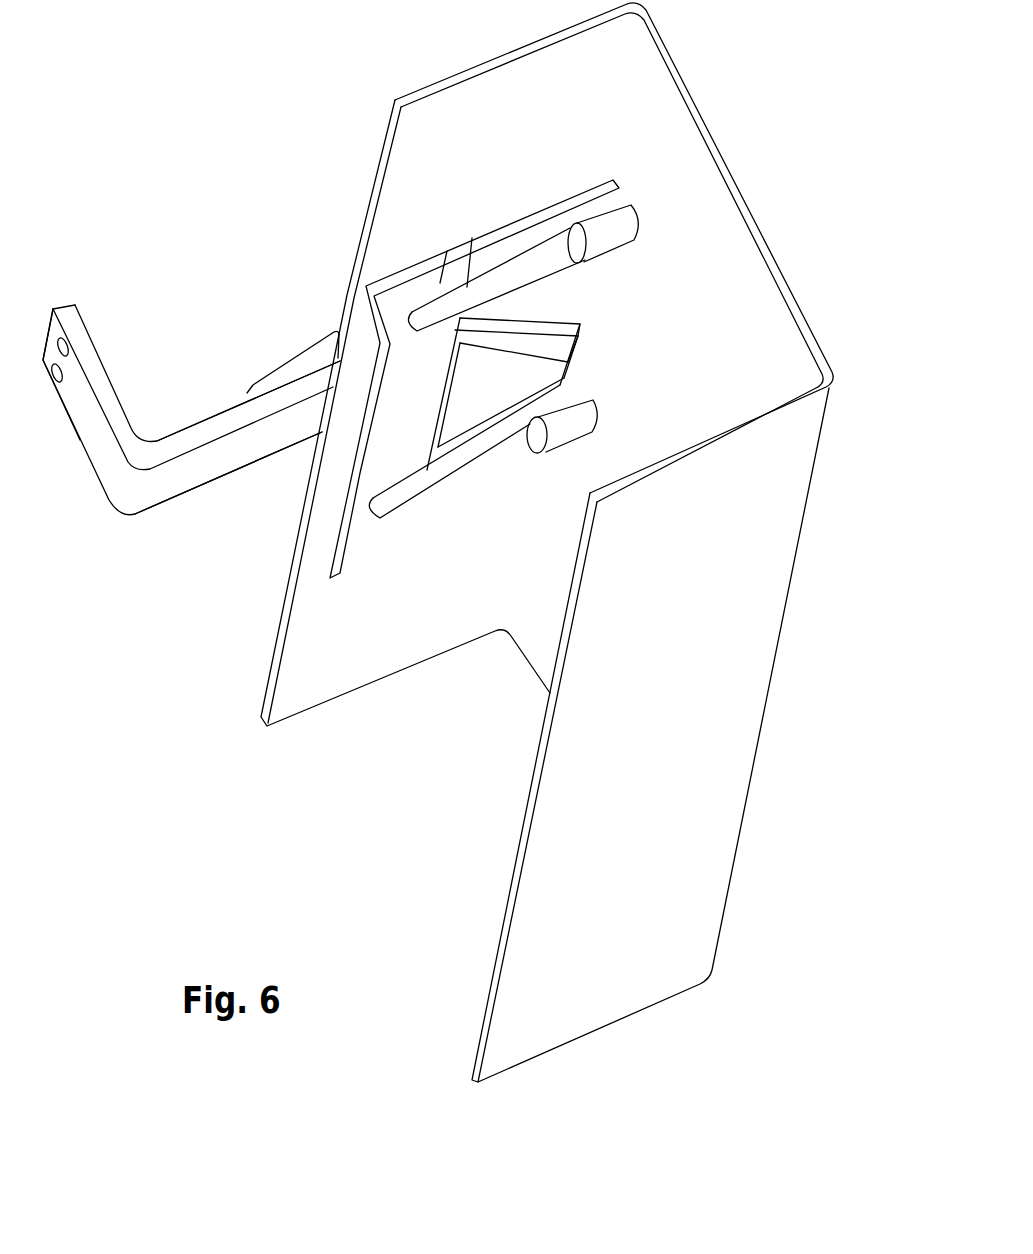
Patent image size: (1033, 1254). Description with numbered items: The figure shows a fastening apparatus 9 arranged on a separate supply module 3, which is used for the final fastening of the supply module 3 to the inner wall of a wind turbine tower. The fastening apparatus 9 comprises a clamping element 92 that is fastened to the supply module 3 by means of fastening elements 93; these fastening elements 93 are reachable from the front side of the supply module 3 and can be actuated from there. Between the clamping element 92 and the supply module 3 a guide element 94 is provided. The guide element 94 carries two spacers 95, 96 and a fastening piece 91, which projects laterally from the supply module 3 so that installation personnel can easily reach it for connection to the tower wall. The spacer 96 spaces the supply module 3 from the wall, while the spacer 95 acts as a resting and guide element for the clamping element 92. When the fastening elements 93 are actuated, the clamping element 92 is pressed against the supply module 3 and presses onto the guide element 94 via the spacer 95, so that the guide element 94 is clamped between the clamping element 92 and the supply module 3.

The supply module 3 is at (697, 928).
The fastening apparatus 9 is at (191, 426).
The fastening piece 91 is at (102, 383).
The clamping element 92 is at (363, 343).
The fastening elements 93 is at (443, 303).
The guide element 94 is at (240, 417).
The spacer 95 is at (468, 402).
The spacer 96 is at (293, 367).